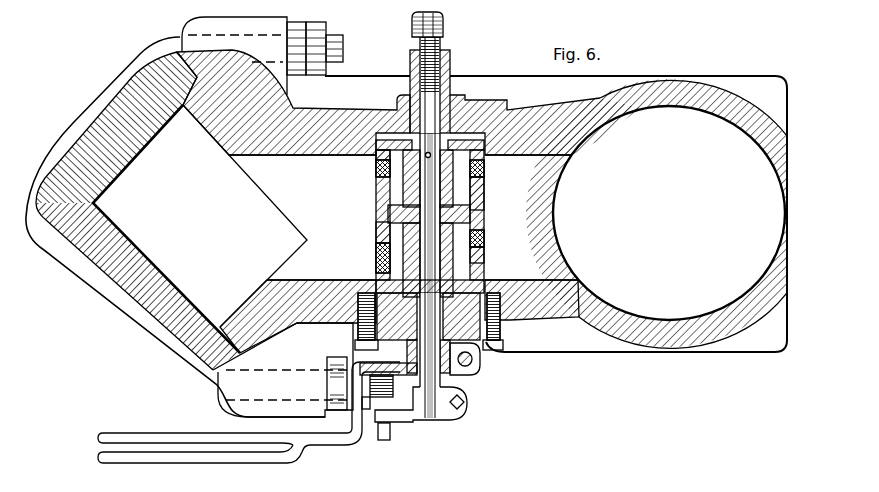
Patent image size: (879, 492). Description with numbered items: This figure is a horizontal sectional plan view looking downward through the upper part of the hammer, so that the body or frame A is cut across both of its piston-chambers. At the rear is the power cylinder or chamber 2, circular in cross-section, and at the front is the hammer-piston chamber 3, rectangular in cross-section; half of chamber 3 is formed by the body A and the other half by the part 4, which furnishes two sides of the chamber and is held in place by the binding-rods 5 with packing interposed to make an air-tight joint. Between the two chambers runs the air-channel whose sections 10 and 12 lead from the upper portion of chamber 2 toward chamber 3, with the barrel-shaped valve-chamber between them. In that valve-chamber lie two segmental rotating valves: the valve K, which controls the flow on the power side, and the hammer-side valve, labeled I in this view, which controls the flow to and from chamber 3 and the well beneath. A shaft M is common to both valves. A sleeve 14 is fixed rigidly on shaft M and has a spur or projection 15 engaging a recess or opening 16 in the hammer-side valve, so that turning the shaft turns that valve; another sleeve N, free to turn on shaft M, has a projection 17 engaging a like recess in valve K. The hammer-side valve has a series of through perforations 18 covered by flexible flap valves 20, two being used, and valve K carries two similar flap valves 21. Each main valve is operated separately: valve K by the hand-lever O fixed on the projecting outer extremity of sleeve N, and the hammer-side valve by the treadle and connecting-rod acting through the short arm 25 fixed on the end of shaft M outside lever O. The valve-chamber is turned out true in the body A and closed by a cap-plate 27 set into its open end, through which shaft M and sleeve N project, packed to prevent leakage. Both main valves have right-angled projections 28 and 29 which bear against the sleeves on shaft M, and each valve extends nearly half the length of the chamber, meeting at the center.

The power cylinder or chamber 2 is at (669, 213).
The hammer-piston chamber 3 is at (241, 216).
The chamber section part 4 is at (98, 120).
The binding-rods 5 is at (58, 141).
The air-passage section 10 is at (403, 217).
The air-passage section 12 is at (495, 201).
The sleeve 14 is at (410, 187).
The spur or projection 15 is at (393, 217).
The recess or opening 16 is at (387, 210).
The projection 17 is at (480, 213).
The through perforations or openings 18 is at (378, 178).
The flexible or flap valves 20 is at (380, 240).
The flap valves 21 is at (480, 173).
The short arm 25 is at (397, 420).
The cap-plate 27 is at (478, 355).
The right-angled projection 28 is at (458, 114).
The right-angled projection 29 is at (412, 147).
The body or frame A is at (322, 102).
The upper sleeve section I is at (377, 160).
The rotating valve K is at (480, 197).
The shaft M is at (450, 83).
The sleeve N is at (470, 252).
The hand-lever O is at (103, 440).